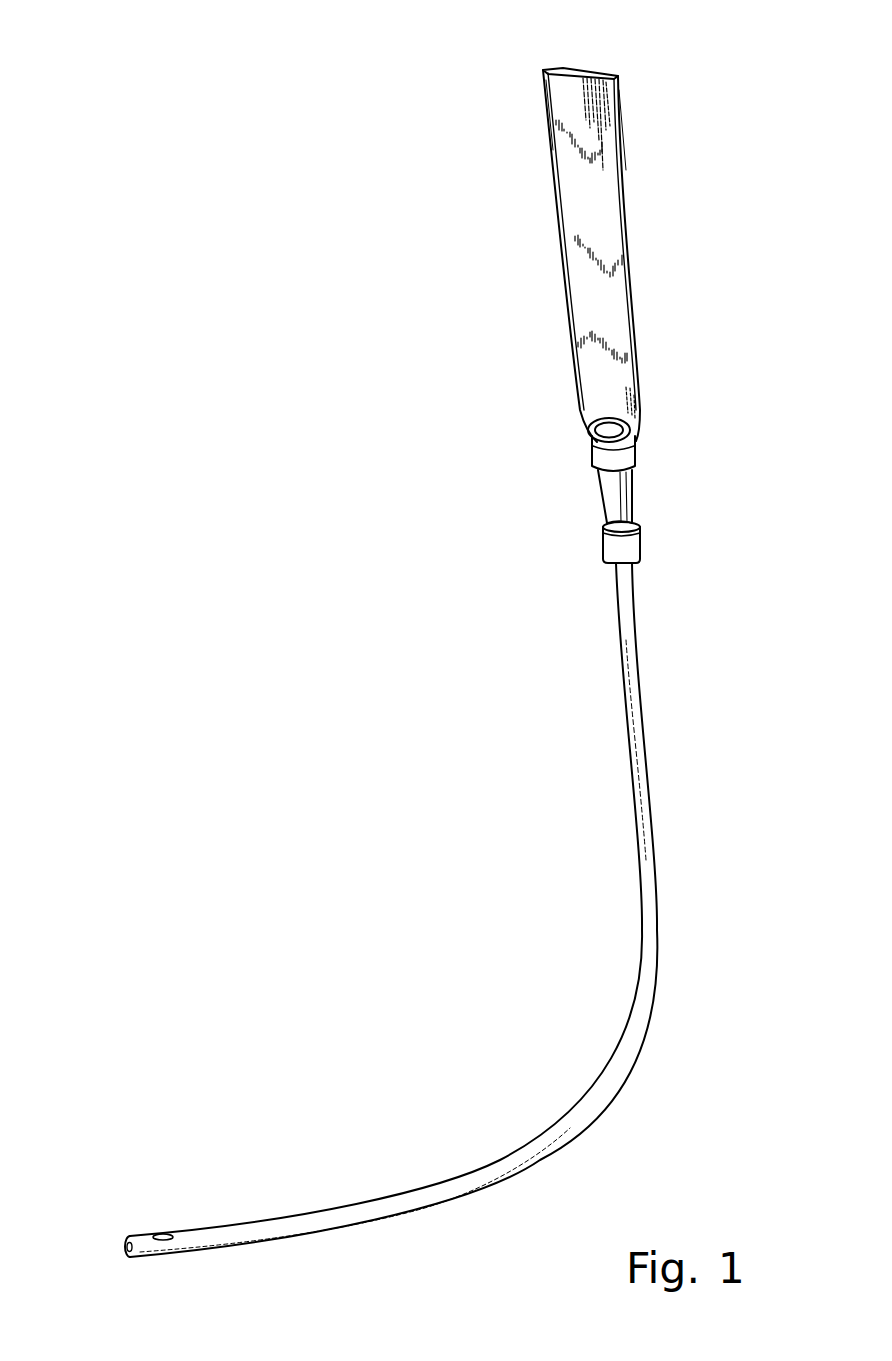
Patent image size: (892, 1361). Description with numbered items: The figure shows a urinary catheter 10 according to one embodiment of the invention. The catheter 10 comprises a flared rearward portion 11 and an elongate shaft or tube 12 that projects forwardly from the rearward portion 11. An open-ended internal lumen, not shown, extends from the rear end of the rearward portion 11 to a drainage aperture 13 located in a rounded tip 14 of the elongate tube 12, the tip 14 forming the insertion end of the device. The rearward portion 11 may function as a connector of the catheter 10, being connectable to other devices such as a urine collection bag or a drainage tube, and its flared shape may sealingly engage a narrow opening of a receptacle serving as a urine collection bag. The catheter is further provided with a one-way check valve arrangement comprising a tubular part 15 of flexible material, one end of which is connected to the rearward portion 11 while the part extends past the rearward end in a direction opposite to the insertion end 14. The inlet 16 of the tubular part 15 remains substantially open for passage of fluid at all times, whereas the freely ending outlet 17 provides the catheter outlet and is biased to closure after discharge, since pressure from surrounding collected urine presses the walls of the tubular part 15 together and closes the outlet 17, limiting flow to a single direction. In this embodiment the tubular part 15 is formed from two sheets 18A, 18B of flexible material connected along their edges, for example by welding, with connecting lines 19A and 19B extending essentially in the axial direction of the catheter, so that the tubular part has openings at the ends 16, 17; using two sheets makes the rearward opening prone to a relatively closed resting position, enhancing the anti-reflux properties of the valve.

The catheter 10 is at (585, 1043).
The flared rearward portion 11 is at (622, 500).
The elongate tube 12 is at (613, 1070).
The drainage aperture 13 is at (158, 1236).
The rounded tip 14 is at (123, 1247).
The tubular part 15 is at (617, 238).
The inlet 16 is at (615, 455).
The outlet 17 is at (597, 90).
The sheet 18A is at (580, 170).
The sheet 18B is at (578, 70).
The connecting line 19A is at (553, 117).
The connecting line 19B is at (625, 168).